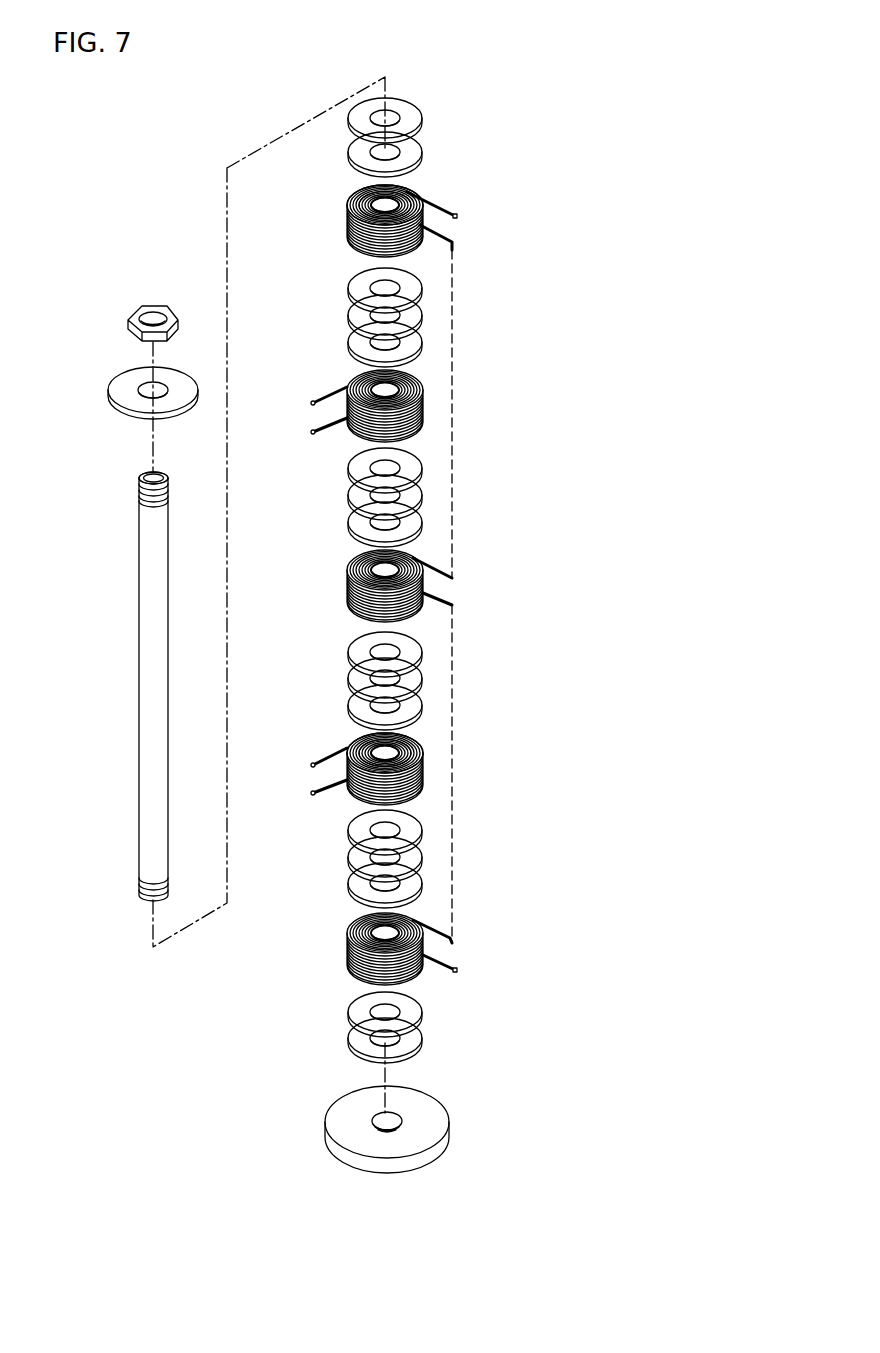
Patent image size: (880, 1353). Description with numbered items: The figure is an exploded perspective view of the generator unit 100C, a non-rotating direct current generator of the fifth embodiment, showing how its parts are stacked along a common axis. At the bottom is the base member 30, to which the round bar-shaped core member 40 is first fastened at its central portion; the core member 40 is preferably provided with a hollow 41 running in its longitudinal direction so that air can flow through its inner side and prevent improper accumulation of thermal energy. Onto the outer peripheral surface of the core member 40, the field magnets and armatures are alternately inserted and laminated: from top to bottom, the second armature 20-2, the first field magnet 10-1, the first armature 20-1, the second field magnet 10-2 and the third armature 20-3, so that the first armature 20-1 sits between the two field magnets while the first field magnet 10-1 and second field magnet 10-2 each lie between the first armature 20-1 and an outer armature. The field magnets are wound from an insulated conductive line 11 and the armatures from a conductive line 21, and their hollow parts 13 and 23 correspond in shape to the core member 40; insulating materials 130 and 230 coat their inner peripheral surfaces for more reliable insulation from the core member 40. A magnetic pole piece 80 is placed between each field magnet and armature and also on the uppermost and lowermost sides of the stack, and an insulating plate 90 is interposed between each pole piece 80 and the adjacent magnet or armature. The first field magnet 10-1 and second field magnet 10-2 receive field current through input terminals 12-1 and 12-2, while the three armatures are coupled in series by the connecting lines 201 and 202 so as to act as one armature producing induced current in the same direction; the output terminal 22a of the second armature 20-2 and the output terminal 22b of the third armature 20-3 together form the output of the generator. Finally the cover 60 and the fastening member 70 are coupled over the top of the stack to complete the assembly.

The generator unit 100C is at (127, 200).
The fastening member 70 is at (145, 312).
The cover 60 is at (131, 386).
The hollow 41 is at (150, 473).
The core member 40 is at (150, 690).
The magnetic pole piece 80 is at (417, 118).
The insulating plate 90 is at (417, 152).
The second armature 20-2 is at (428, 248).
The output terminal 22a is at (458, 215).
The hollow part 23 is at (383, 200).
The conductive line 21 is at (400, 192).
The insulating material 230 is at (368, 208).
The first field magnet 10-1 is at (428, 419).
The input terminal 12-1 is at (311, 432).
The first armature 20-1 is at (428, 584).
The connecting line 201 is at (455, 498).
The connection line 202 is at (455, 688).
The second field magnet 10-2 is at (428, 784).
The input terminal 12-2 is at (311, 793).
The insulating material 130 is at (376, 740).
The hollow part 13 is at (388, 747).
The conductive line 11 is at (420, 757).
The third armature 20-3 is at (428, 948).
The output terminal 22b is at (458, 972).
The base member 30 is at (340, 1112).